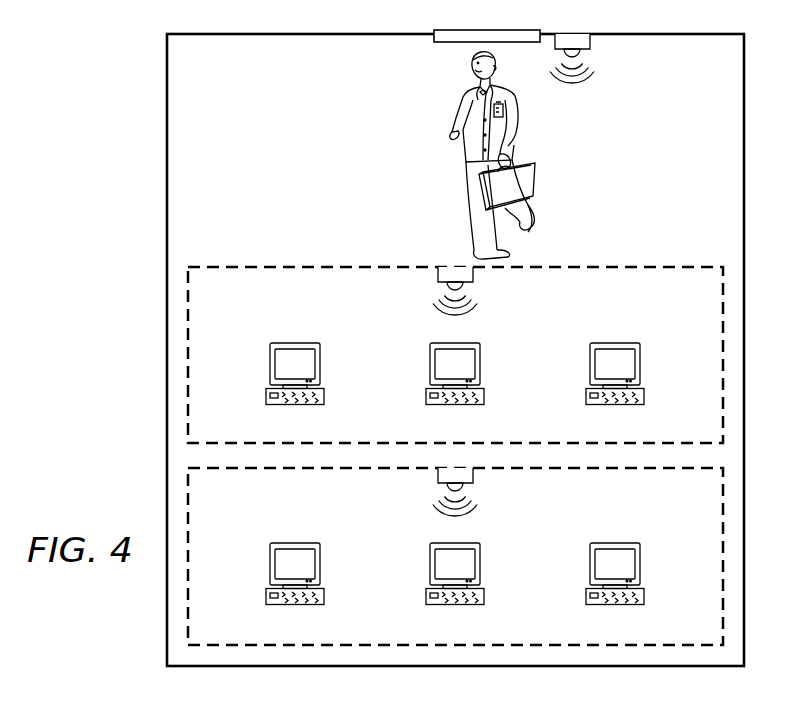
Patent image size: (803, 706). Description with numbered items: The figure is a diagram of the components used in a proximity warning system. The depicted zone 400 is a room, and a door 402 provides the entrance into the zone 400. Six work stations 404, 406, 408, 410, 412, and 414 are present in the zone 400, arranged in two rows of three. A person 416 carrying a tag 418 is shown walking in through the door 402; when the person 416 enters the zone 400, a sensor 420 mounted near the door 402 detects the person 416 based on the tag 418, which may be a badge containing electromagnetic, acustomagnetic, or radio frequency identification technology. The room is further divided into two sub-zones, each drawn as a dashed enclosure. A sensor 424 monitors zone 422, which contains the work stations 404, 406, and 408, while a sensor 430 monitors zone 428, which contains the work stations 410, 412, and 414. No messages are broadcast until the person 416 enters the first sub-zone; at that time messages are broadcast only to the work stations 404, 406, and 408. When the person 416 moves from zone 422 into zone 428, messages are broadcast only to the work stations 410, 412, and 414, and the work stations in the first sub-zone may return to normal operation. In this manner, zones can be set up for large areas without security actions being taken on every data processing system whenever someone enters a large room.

The zone 400 is at (160, 254).
The door 402 is at (452, 43).
The work station 404 is at (270, 362).
The work station 406 is at (430, 363).
The work station 408 is at (643, 360).
The work station 410 is at (270, 565).
The work station 412 is at (430, 565).
The work station 414 is at (643, 563).
The person 416 is at (470, 162).
The tag 418 is at (510, 116).
The sensor 420 is at (590, 42).
The zone 422 is at (251, 313).
The sensor 424 is at (474, 270).
The zone 428 is at (251, 514).
The sensor 430 is at (474, 471).